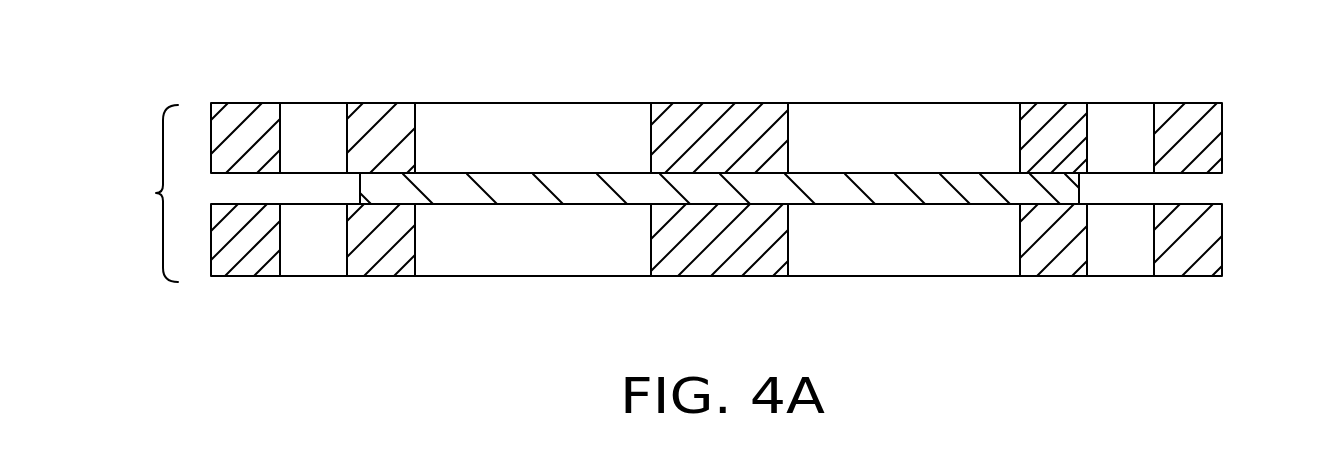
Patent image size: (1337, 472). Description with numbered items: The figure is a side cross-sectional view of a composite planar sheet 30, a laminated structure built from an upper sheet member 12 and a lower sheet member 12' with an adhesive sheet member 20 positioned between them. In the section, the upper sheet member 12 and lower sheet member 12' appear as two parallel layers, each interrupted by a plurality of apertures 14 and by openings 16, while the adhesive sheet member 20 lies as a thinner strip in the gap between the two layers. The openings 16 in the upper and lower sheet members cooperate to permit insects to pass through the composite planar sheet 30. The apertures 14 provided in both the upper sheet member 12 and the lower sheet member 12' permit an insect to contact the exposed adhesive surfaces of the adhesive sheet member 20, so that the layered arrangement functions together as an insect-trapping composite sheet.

The composite planar sheet 30 is at (132, 176).
The upper sheet member 12 is at (746, 105).
The lower sheet member 12' is at (759, 279).
The apertures 14 is at (552, 120).
The openings 16 is at (323, 120).
The adhesive sheet member 20 is at (602, 195).